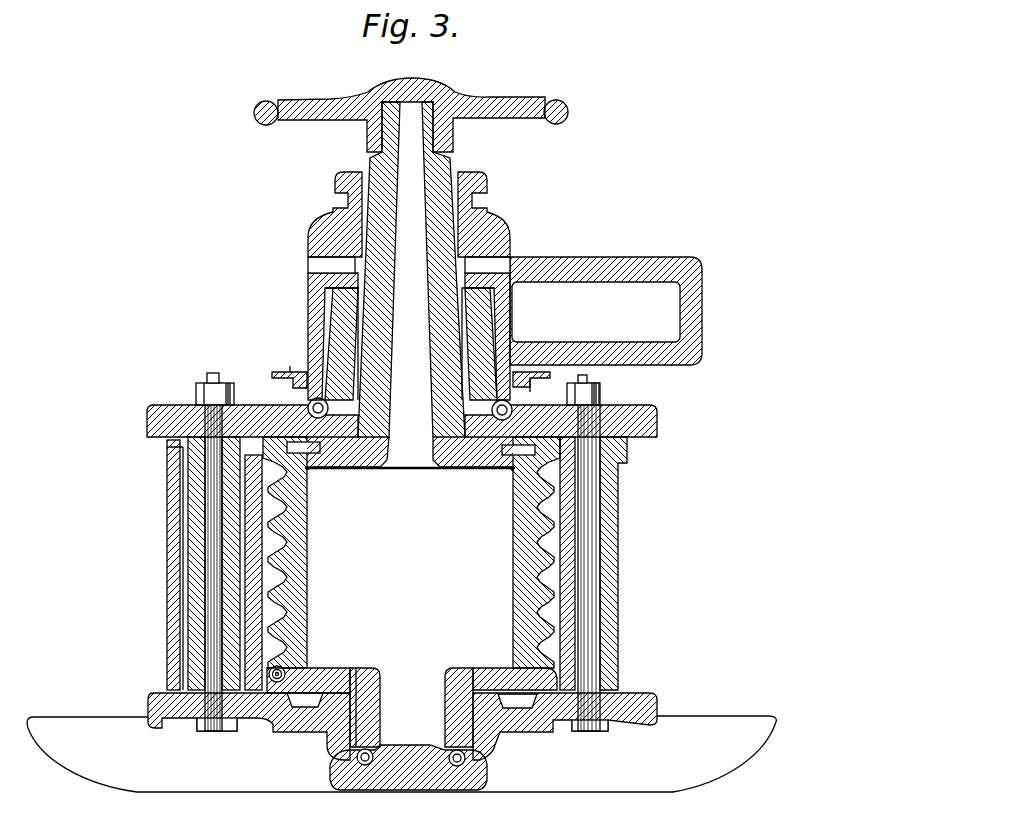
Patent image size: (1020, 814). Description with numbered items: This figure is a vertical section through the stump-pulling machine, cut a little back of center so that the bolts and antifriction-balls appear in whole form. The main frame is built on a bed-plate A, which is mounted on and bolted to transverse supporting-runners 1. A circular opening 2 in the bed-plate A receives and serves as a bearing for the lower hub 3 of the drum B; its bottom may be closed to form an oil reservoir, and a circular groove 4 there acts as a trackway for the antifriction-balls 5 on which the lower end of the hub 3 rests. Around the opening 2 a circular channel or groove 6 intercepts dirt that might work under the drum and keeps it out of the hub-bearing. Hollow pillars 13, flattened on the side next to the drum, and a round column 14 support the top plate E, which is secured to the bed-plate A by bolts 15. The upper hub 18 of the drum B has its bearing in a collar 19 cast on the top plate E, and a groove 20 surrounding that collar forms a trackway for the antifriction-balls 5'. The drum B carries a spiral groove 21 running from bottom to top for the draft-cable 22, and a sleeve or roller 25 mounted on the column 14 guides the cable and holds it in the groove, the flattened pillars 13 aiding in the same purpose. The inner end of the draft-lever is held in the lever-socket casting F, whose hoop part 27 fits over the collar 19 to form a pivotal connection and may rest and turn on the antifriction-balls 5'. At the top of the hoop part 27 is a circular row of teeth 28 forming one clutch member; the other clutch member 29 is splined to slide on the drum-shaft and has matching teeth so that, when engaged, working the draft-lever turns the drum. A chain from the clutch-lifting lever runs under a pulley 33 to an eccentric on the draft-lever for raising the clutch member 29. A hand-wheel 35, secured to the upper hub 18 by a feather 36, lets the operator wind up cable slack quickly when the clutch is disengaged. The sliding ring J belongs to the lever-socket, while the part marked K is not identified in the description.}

The transverse supporting-runners 1 is at (401, 754).
The circular opening 2 is at (384, 669).
The lower hub 3 is at (358, 705).
The circular groove 4 is at (363, 787).
The antifriction-balls 5 is at (412, 765).
The antifriction-balls 5' is at (410, 409).
The circular channel or groove 6 is at (412, 702).
The hollow pillars 13 is at (612, 565).
The round column 14 is at (197, 553).
The bolts 15 is at (213, 731).
The upper hub 18 is at (380, 167).
The collar 19 is at (340, 360).
The groove 20 is at (470, 427).
The spiral groove 21 is at (302, 451).
The draft-cable 22 is at (287, 672).
The sleeve or roller 25 is at (172, 514).
The hoop part 27 is at (310, 327).
The circular row of teeth 28 is at (409, 265).
The clutch member 29 is at (336, 240).
The pulley 33 is at (510, 448).
The hand-wheel 35 is at (256, 113).
The feather 36 is at (368, 126).
The bed-plate A is at (153, 698).
The drum B is at (410, 518).
The top plate E is at (402, 413).
The lever-socket casting F is at (606, 311).
The sliding ring J is at (406, 378).
The stop lug K is at (272, 374).